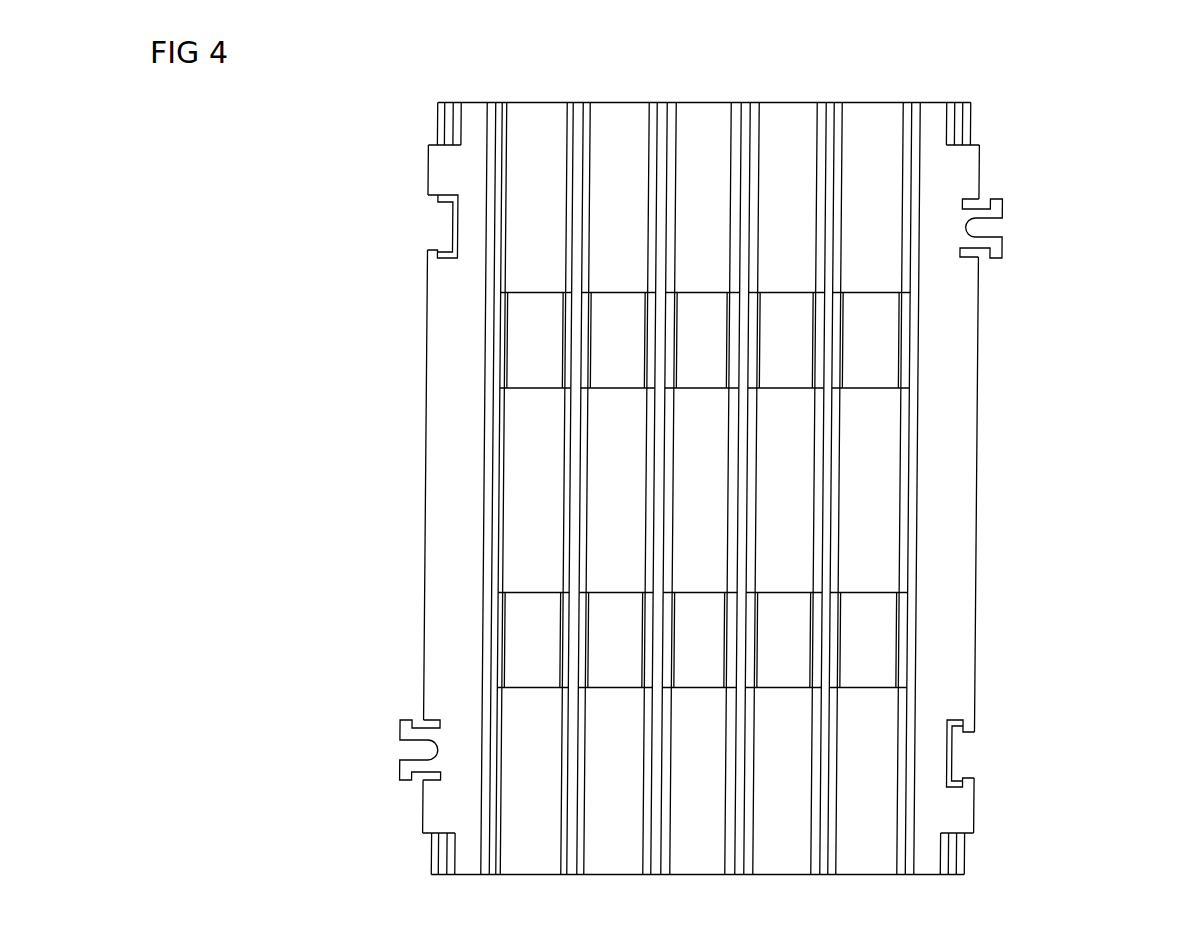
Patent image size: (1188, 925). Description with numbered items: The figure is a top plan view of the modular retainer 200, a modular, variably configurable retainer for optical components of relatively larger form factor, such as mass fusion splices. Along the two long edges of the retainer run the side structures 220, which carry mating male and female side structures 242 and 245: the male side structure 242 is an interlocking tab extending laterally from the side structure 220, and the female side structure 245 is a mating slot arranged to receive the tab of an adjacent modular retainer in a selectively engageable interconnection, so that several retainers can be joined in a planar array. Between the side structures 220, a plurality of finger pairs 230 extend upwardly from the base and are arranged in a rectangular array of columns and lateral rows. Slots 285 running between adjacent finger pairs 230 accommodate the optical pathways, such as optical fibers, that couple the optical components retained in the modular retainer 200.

The modular retainer 200 is at (1172, 178).
The side structures 220 is at (463, 477).
The finger pairs 230 is at (650, 367).
The male side structure 242 is at (990, 245).
The female side structure 245 is at (445, 220).
The slots 285 is at (745, 104).